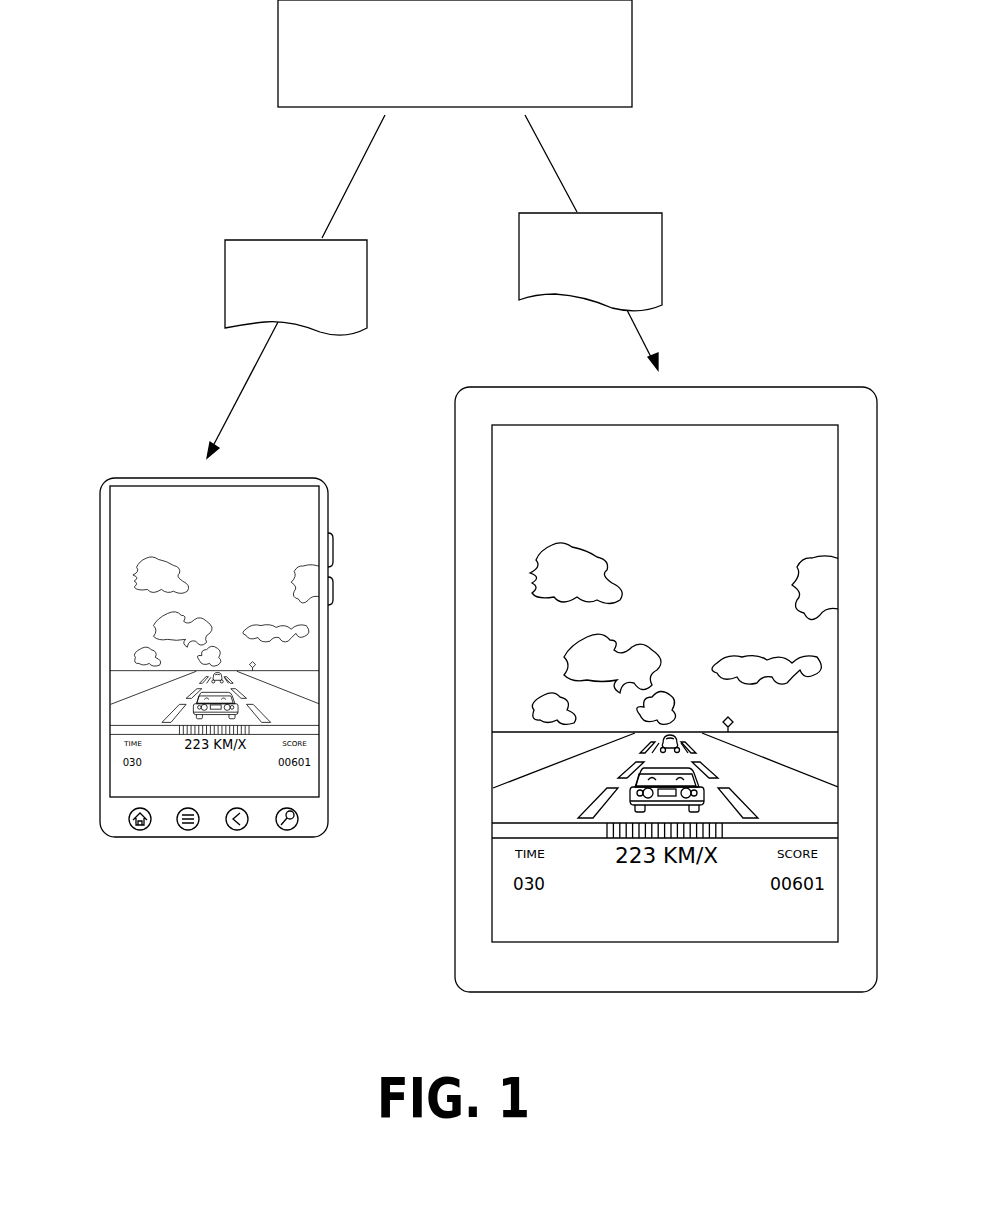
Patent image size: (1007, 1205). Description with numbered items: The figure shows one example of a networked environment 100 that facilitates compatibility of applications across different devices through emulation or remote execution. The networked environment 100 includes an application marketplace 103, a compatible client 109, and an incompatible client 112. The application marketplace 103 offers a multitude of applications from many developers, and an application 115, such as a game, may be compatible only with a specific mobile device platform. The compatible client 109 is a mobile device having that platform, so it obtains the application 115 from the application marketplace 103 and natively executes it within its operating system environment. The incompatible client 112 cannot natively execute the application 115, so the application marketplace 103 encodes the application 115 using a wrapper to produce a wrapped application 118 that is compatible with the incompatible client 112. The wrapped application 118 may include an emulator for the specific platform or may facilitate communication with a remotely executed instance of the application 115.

The networked environment 100 is at (198, 922).
The application marketplace 103 is at (472, 75).
The compatible client 109 is at (100, 540).
The incompatible client 112 is at (455, 460).
The application 115 is at (313, 305).
The wrapped application 118 is at (607, 288).